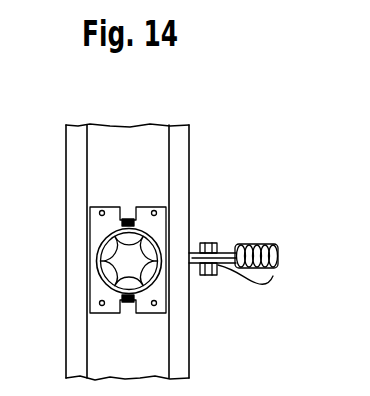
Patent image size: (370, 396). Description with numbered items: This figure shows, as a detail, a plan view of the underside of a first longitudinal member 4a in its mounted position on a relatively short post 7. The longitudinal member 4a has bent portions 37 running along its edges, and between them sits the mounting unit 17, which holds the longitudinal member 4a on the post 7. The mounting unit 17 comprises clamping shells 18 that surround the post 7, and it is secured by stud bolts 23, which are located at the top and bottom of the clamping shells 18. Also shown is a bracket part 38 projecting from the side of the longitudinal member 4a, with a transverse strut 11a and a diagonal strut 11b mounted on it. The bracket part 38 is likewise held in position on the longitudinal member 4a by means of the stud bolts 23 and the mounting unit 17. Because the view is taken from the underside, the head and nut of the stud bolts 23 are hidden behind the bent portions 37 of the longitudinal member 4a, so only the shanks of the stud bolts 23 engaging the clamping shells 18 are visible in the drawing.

The first longitudinal member 4a is at (143, 224).
The bent portions 37 is at (77, 168).
The clamping shells 18 is at (100, 219).
The stud bolts 23 is at (127, 210).
The mounting unit 17 is at (126, 259).
The post 7 is at (102, 281).
The bracket part 38 is at (210, 280).
The transverse strut 11a is at (258, 243).
The diagonal strut 11b is at (262, 278).